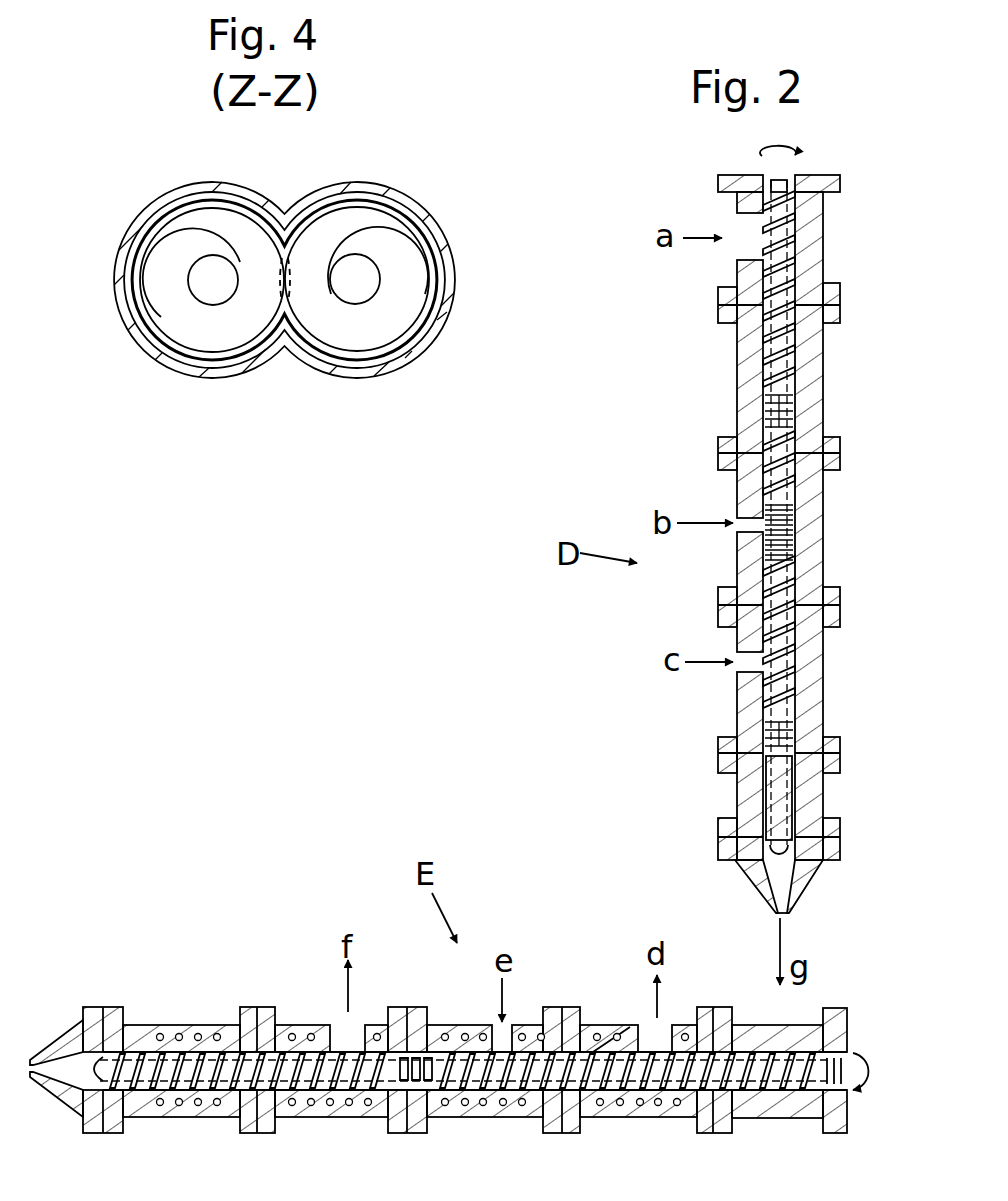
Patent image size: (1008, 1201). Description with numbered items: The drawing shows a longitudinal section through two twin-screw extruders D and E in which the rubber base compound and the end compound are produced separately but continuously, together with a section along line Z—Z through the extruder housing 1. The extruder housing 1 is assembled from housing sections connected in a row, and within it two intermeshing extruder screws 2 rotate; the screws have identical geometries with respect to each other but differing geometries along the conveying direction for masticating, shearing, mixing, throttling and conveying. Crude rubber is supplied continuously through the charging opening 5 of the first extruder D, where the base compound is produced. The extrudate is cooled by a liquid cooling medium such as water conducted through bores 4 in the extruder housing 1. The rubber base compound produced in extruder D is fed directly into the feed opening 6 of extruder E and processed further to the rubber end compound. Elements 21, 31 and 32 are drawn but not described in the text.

In FIG. 4, the extruder housing 1 is at (372, 190).
In FIG. 2, the extruder housing 1 is at (837, 1122).
In FIG. 4, the extruder screws 2 is at (163, 310).
In FIG. 2, the extruder screws 2 is at (763, 430).
In FIG. 2, the bores 4 is at (158, 1027).
In FIG. 2, the charging opening 5 is at (757, 235).
In FIG. 2, the feed opening 6 is at (783, 1043).
In FIG. 2, the horizontal screw 21 is at (217, 1068).
In FIG. 2, the nozzle of vertical extruder 31 is at (801, 863).
In FIG. 2, the nozzle of horizontal extruder 32 is at (78, 1105).